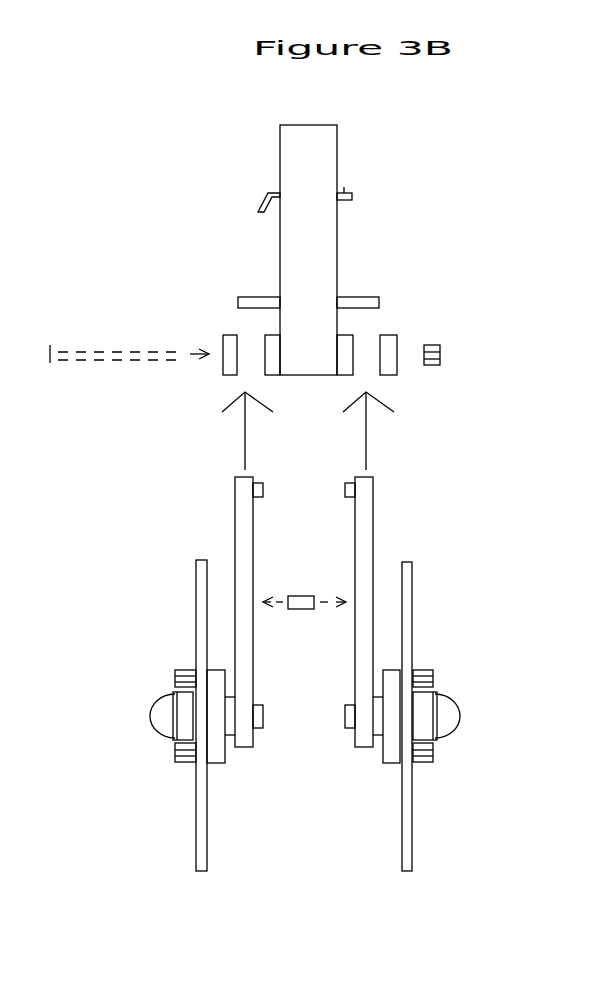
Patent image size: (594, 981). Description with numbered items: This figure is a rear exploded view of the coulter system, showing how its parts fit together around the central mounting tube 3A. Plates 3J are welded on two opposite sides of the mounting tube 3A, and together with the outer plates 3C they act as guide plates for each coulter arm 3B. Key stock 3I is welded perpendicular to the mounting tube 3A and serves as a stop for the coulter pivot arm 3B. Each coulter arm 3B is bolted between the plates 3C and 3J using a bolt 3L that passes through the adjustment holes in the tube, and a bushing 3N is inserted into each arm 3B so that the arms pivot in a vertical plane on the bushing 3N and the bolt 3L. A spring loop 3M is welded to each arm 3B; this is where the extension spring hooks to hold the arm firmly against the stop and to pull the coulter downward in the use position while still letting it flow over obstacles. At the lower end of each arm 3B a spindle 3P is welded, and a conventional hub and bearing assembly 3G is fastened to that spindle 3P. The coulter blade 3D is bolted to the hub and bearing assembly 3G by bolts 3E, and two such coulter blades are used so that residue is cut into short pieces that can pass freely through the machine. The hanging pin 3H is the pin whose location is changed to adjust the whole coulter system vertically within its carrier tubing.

The mounting tube 3A is at (345, 145).
The hanging pin 3H is at (251, 198).
The key stock 3I is at (231, 287).
The plates 3J is at (259, 333).
The plates 3C is at (222, 380).
The bolt 3L is at (85, 370).
The coulter arm 3B is at (222, 513).
The spring loop 3M is at (338, 492).
The coulter blade 3D is at (187, 580).
The bushing 3N is at (303, 612).
The bolts 3E is at (169, 673).
The hub and bearing assembly 3G is at (142, 712).
The spindle 3P is at (330, 728).